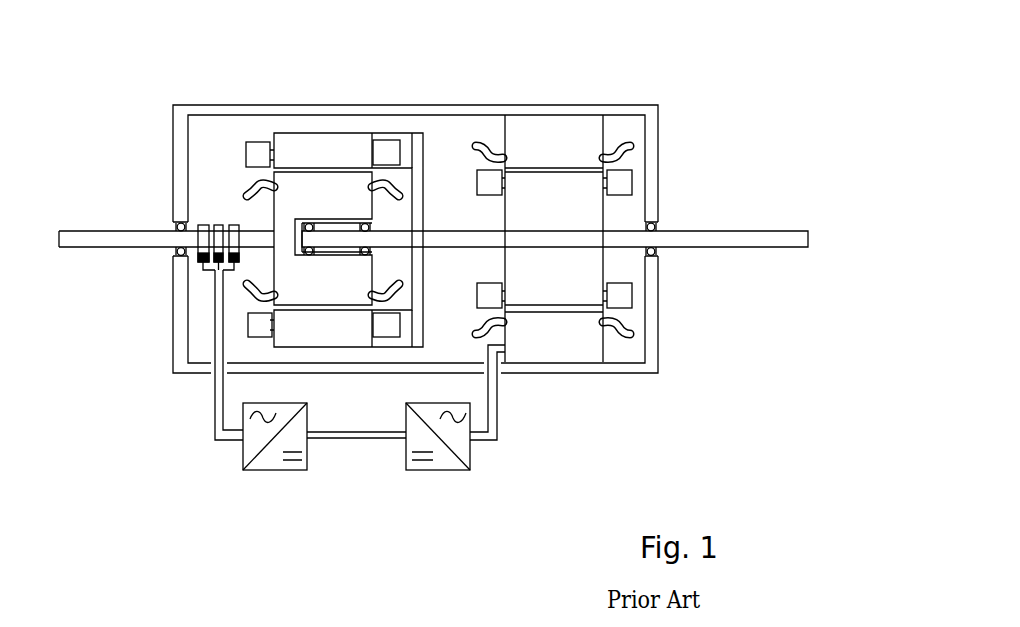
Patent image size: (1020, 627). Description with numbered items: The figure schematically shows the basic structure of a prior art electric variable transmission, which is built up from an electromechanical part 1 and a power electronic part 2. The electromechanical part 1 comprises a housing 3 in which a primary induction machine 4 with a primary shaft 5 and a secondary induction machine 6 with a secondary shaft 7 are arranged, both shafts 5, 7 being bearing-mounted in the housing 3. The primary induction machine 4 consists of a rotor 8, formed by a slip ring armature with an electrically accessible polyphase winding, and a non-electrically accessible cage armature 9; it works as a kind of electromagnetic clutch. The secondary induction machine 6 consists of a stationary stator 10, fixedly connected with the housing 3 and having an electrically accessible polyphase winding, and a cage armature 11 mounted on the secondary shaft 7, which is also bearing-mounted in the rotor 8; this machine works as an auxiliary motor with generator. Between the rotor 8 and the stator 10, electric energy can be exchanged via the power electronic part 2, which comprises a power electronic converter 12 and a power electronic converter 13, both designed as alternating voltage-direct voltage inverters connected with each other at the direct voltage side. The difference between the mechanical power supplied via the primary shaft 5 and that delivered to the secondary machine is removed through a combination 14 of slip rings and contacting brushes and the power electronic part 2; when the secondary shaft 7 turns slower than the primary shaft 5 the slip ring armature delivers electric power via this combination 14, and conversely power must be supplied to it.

The electromechanical part 1 is at (433, 280).
The power electronic part 2 is at (360, 400).
The housing 3 is at (455, 105).
The primary induction machine 4 is at (313, 189).
The primary shaft 5 is at (98, 231).
The secondary induction machine 6 is at (542, 280).
The secondary shaft 7 is at (765, 231).
The rotor 8 is at (305, 197).
The cage armature 9 is at (340, 137).
The stator 10 is at (557, 135).
The cage armature 11 is at (557, 273).
The power electronic converter 12 is at (270, 470).
The power electronic converter 13 is at (450, 470).
The combination of slip rings and brushes 14 is at (208, 265).